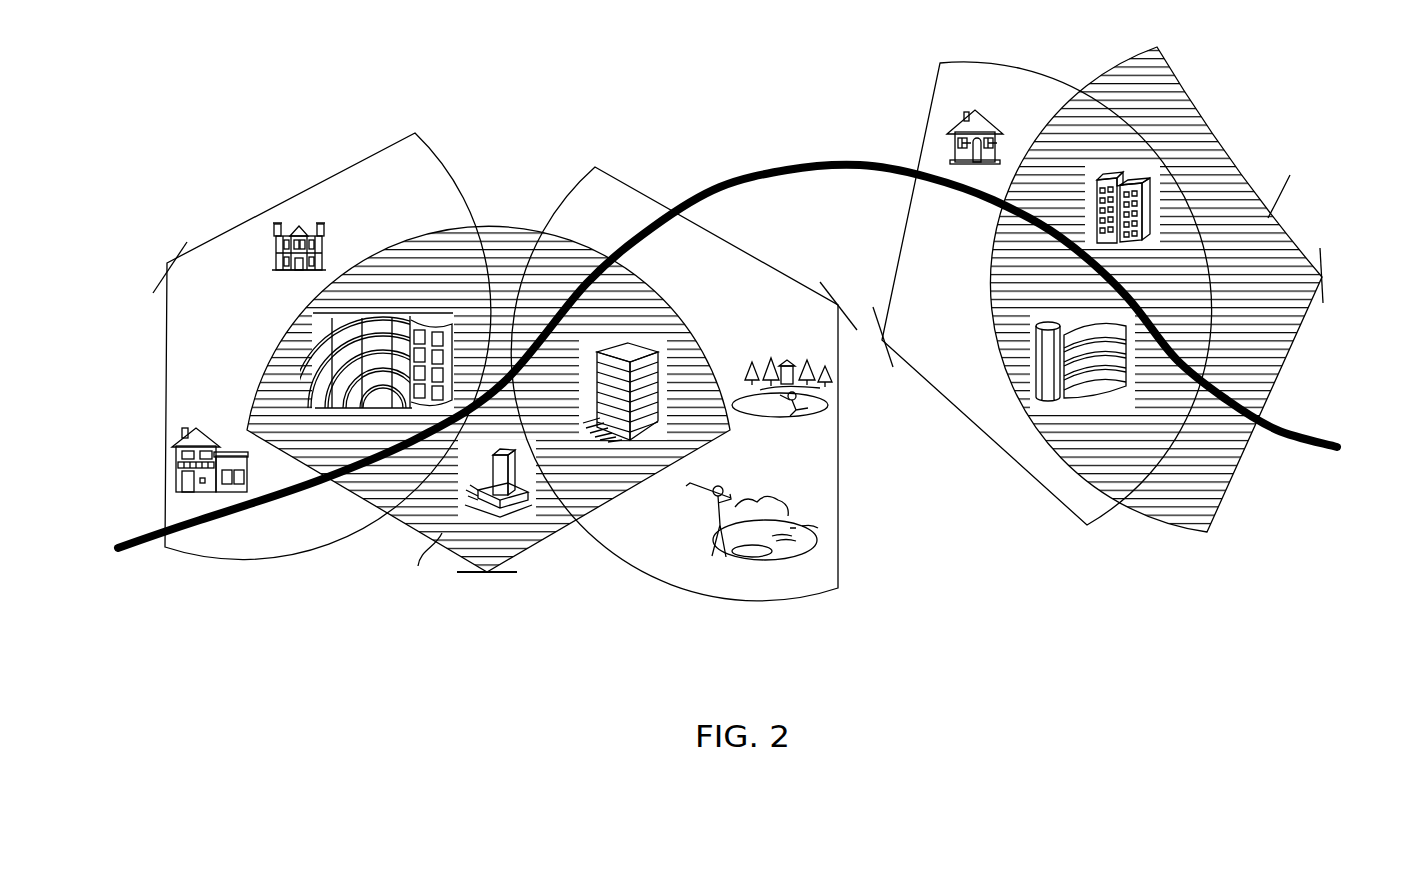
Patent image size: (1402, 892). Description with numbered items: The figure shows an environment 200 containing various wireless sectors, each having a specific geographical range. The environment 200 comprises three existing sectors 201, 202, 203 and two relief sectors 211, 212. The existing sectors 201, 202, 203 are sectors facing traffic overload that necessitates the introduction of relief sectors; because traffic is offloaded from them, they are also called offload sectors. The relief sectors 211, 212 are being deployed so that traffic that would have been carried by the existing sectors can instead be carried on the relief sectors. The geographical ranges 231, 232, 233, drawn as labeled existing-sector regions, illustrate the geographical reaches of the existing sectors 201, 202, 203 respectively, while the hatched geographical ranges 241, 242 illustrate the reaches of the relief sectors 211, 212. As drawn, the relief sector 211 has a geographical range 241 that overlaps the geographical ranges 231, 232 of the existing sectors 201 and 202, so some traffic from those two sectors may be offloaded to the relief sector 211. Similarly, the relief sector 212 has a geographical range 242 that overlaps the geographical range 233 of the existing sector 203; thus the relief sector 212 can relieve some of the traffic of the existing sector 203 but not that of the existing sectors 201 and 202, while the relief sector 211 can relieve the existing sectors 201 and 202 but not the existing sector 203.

The environment 200 is at (1317, 43).
The existing sector 201 is at (167, 262).
The existing sector 202 is at (838, 303).
The existing sector 203 is at (887, 353).
The relief sector 211 is at (500, 580).
The relief sector 212 is at (1325, 275).
The geographical range 231 is at (368, 157).
The geographical range 232 is at (622, 183).
The geographical range 233 is at (993, 63).
The geographical range 241 is at (500, 232).
The geographical range 242 is at (1232, 155).